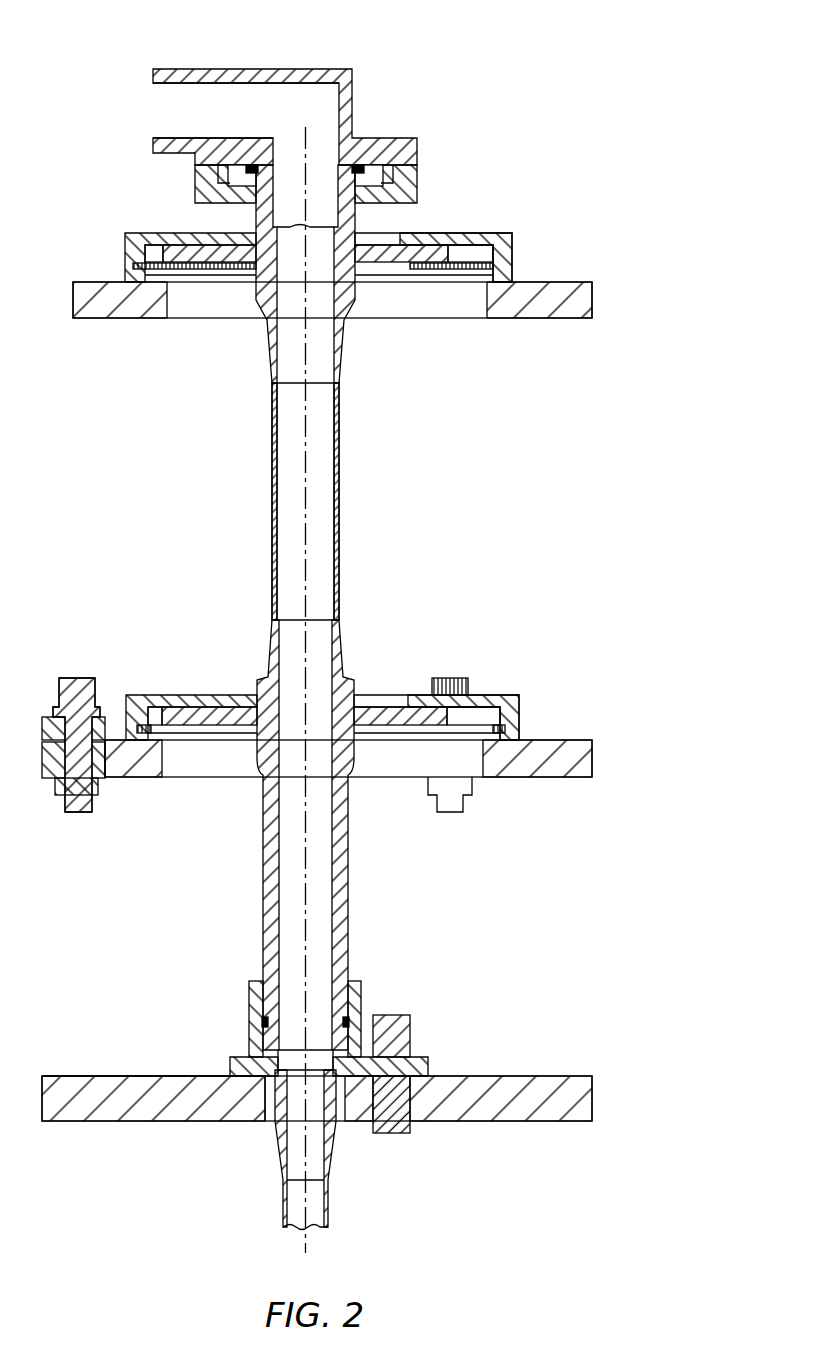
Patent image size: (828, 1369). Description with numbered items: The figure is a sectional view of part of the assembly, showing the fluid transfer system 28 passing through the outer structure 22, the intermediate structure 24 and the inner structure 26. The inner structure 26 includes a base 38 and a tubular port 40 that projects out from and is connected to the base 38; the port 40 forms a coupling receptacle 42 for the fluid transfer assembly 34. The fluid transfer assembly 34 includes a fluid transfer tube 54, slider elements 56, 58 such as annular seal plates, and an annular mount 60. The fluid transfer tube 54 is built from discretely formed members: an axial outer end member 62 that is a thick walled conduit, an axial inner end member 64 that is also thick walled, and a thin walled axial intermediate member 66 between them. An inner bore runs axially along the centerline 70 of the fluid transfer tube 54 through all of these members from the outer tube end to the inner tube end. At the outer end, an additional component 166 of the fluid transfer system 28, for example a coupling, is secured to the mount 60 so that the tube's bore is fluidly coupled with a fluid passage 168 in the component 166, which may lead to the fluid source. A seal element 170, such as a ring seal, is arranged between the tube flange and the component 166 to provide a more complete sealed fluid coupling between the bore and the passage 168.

The component 166 is at (368, 66).
The fluid passage 168 is at (175, 115).
The seal element 170 is at (360, 163).
The mount 60 is at (418, 185).
The fluid transfer system 28 is at (302, 104).
The outer structure 22 is at (620, 292).
The slider element 58 is at (389, 258).
The axial outer end member 62 is at (258, 338).
The fluid transfer tube 54 is at (355, 412).
The fluid transfer assembly 34 is at (355, 474).
The axial intermediate member 66 is at (258, 474).
The intermediate structure 24 is at (620, 746).
The slider element 56 is at (392, 718).
The axial inner end member 64 is at (256, 872).
The tubular port 40 is at (248, 1014).
The coupling receptacle 42 is at (362, 1020).
The base 38 is at (122, 1076).
The inner structure 26 is at (620, 1086).
The centerline 70 is at (306, 1248).